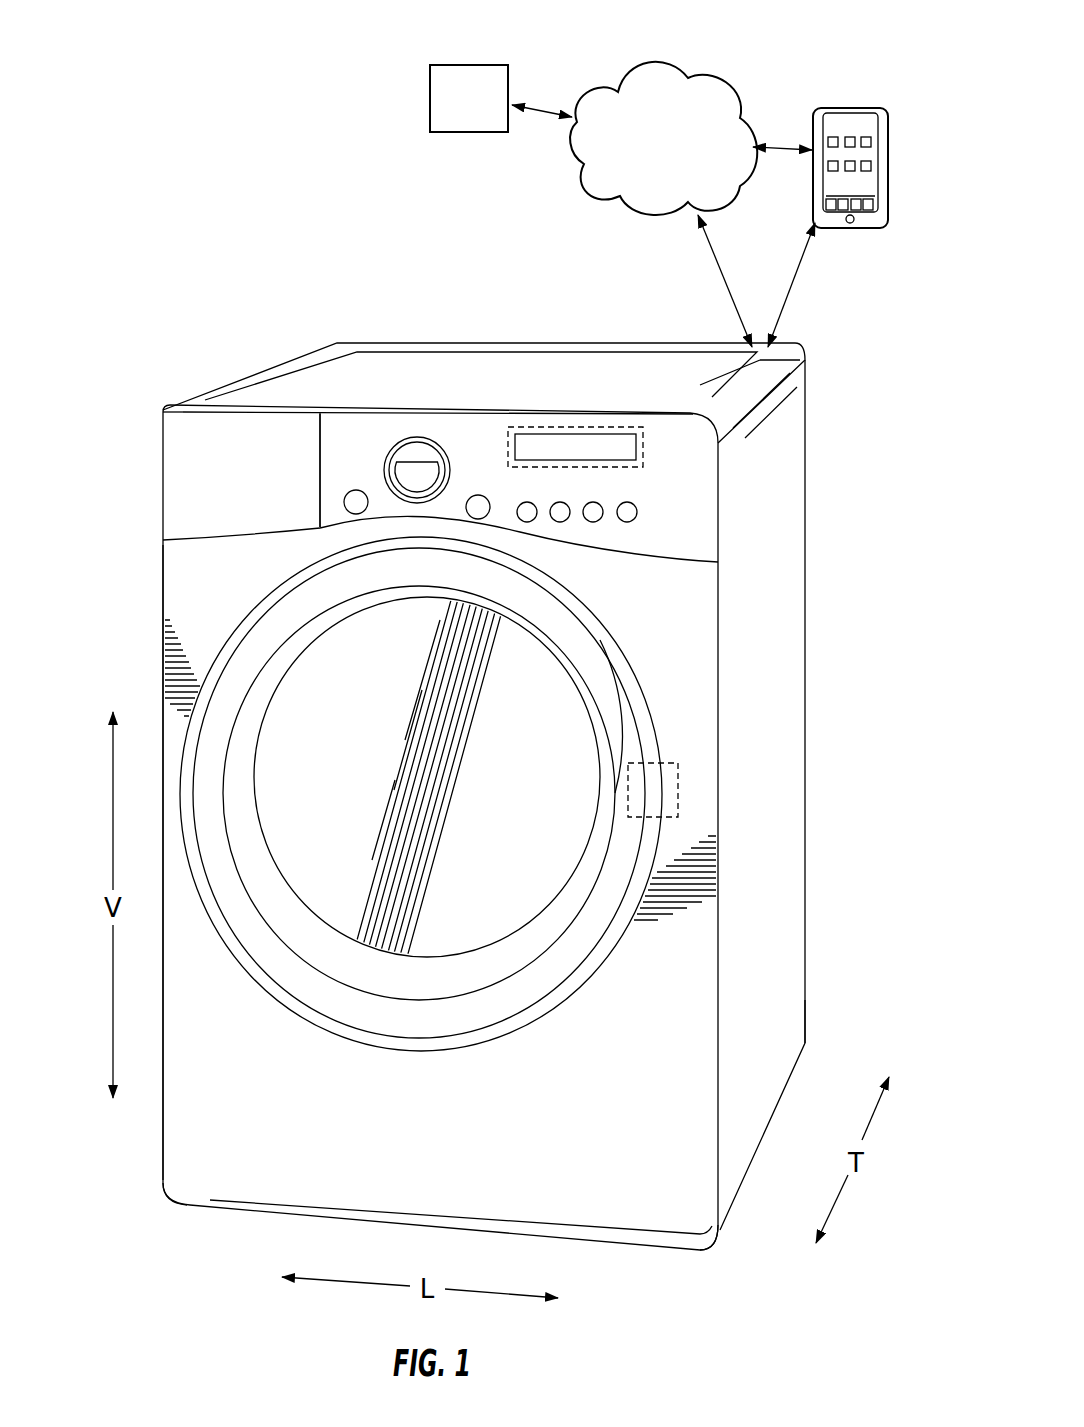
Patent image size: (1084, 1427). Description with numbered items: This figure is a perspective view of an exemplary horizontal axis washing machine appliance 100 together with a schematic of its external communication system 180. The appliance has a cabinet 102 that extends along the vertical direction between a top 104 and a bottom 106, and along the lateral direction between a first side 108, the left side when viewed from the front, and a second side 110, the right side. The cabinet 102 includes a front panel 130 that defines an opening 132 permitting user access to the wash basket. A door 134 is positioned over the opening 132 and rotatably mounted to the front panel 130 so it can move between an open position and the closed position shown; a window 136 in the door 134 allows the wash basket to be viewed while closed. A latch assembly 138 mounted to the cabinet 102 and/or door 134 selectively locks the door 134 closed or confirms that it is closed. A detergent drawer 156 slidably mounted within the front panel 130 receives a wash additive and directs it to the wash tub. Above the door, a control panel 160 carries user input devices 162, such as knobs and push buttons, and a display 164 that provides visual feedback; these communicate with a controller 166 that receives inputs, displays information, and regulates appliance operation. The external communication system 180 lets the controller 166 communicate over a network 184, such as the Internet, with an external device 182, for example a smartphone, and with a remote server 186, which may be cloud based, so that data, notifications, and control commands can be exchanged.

The washing machine appliance 100 is at (184, 303).
The cabinet 102 is at (785, 643).
The top 104 is at (822, 352).
The bottom 106 is at (807, 1091).
The first side 108 is at (167, 1210).
The second side 110 is at (713, 1254).
The front panel 130 is at (182, 600).
The opening 132 is at (625, 651).
The door 134 is at (637, 750).
The window 136 is at (339, 730).
The latch assembly 138 is at (680, 797).
The detergent drawer 156 is at (182, 442).
The control panel 160 is at (482, 441).
The user input devices 162 is at (412, 462).
The display 164 is at (585, 443).
The controller 166 is at (563, 427).
The external communication system 180 is at (810, 65).
The external device 182 is at (888, 180).
The network 184 is at (639, 155).
The remote server 186 is at (451, 114).